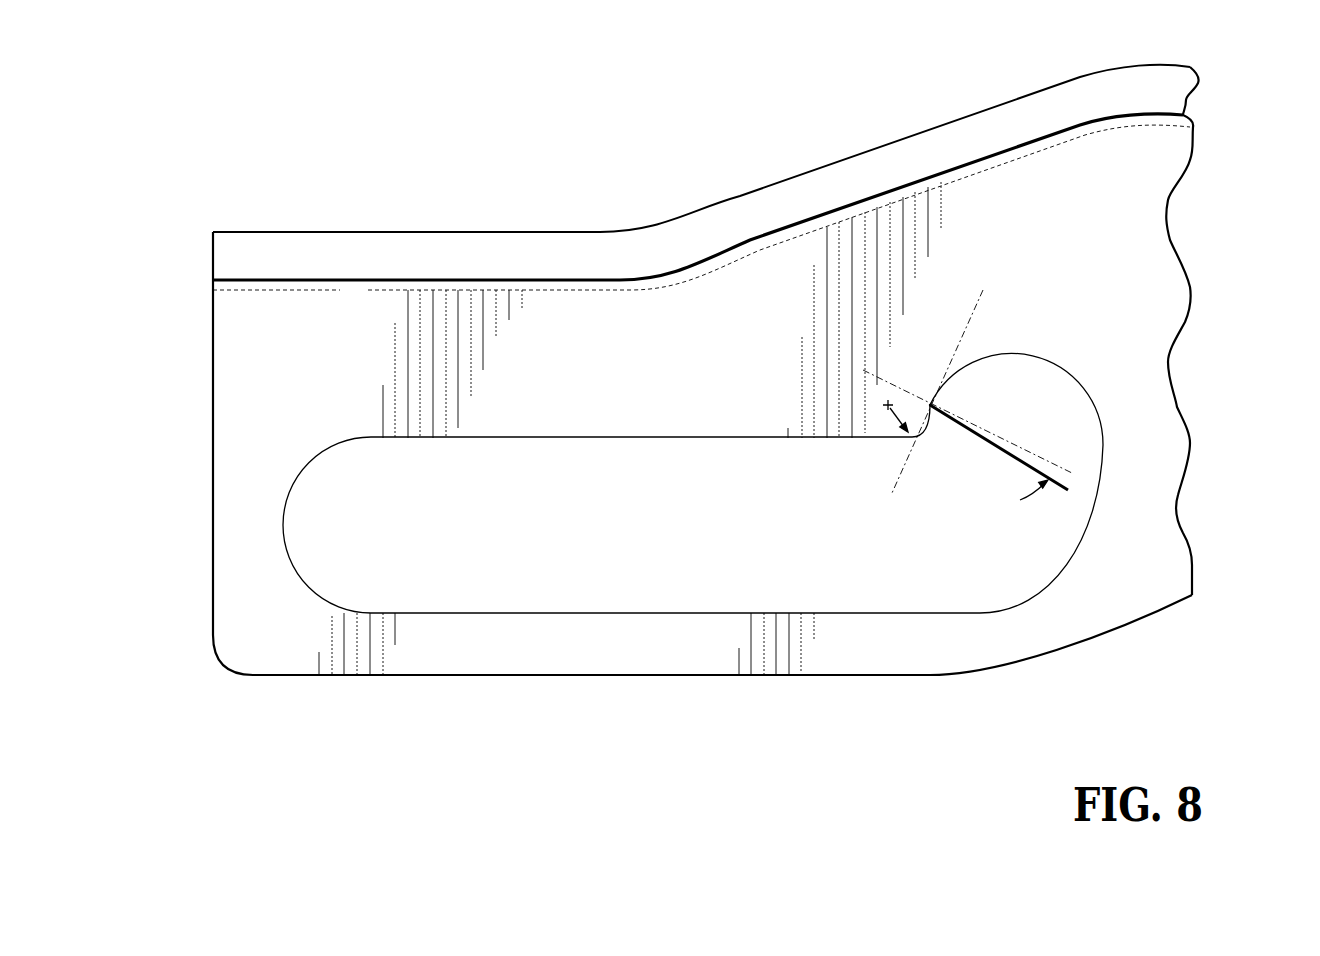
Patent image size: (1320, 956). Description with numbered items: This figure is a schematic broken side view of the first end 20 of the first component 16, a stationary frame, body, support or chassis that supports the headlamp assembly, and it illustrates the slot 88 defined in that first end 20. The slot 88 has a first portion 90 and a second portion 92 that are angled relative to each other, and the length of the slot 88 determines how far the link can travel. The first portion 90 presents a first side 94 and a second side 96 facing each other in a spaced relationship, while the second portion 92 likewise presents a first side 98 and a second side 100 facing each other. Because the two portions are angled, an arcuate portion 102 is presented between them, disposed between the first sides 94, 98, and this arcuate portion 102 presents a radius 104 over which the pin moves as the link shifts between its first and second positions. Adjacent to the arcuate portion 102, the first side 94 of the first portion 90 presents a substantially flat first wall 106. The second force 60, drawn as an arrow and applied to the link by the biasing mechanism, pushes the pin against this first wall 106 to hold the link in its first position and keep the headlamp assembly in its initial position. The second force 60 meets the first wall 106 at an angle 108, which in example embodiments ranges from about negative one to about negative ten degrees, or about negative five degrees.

The first component 16 is at (1172, 568).
The first end 20 is at (433, 662).
The second force 60 is at (1006, 450).
The slot 88 is at (630, 525).
The first portion 90 is at (1043, 362).
The second portion 92 is at (283, 525).
The first side 94 is at (935, 407).
The second side 96 is at (1084, 512).
The first side 98 is at (537, 438).
The second side 100 is at (593, 613).
The arcuate portion 102 is at (913, 434).
The radius 104 is at (898, 424).
The first wall 106 is at (930, 403).
The angle 108 is at (1058, 462).